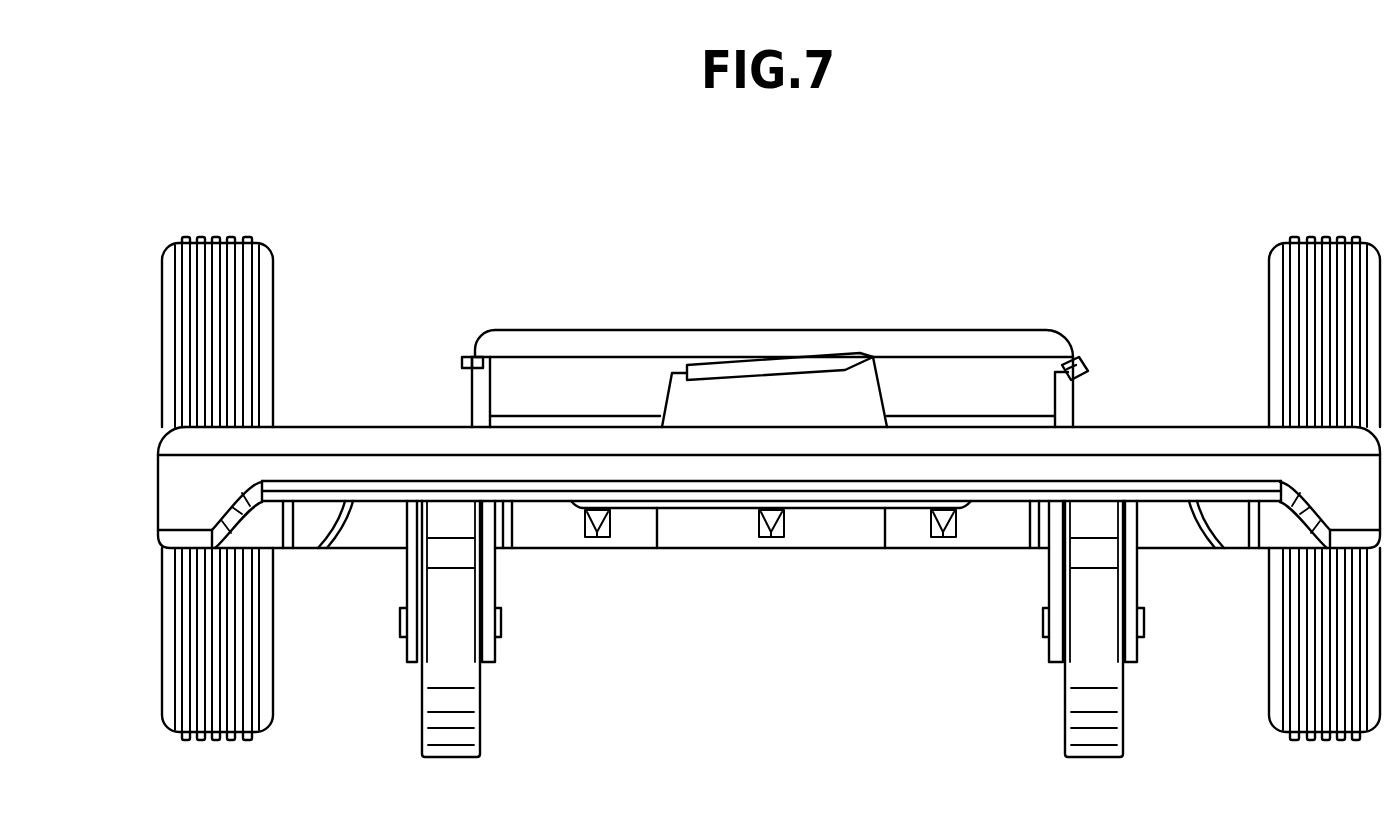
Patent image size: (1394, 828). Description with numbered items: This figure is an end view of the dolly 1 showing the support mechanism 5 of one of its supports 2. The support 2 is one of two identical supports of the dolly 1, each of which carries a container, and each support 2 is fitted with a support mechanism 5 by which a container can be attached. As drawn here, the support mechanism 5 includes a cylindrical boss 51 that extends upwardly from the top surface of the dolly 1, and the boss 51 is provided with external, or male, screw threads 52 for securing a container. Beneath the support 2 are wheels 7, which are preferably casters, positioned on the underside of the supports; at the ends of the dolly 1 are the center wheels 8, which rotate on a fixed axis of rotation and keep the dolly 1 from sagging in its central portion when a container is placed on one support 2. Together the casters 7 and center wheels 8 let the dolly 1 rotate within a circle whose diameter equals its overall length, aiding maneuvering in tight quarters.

The dolly 1 is at (784, 712).
The support 2 is at (1186, 425).
The support mechanism 5 is at (626, 330).
The cylindrical boss 51 is at (987, 367).
The external screw threads 52 is at (462, 355).
The wheels 7 is at (454, 734).
The center wheels 8 is at (163, 727).